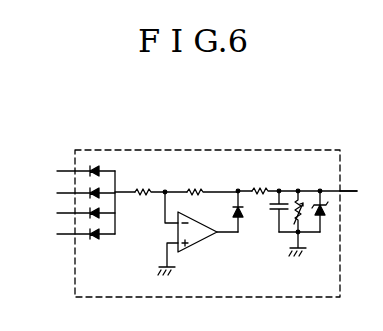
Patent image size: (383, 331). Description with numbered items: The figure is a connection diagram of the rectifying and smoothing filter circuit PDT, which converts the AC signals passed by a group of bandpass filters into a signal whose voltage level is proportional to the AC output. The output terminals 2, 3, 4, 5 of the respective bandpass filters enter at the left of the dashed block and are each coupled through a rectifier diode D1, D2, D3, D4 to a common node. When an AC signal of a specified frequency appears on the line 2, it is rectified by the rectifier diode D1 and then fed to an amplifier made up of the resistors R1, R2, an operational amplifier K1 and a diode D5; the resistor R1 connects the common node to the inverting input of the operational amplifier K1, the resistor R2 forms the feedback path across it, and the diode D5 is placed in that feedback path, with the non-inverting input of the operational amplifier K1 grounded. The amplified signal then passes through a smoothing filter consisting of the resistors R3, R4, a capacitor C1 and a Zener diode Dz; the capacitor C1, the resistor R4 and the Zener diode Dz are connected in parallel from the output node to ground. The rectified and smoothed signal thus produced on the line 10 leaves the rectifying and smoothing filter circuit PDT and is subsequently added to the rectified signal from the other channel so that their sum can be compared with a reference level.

The output terminal 2 is at (57, 171).
The output terminal 3 is at (57, 193).
The output terminal 4 is at (57, 213).
The output terminal 5 is at (57, 234).
The output signal line 10 is at (350, 191).
The rectifier diode D1 is at (93, 168).
The rectifier diode D2 is at (95, 190).
The rectifier diode D3 is at (101, 215).
The rectifier diode D4 is at (96, 238).
The diode D5 is at (236, 210).
The resistor R1 is at (150, 180).
The resistor R2 is at (212, 180).
The resistor R3 is at (265, 179).
The resistor R4 is at (294, 224).
The capacitor C1 is at (273, 211).
The operational amplifier K1 is at (196, 236).
The Zener diode Dz is at (322, 228).
The rectifying and smoothing filter circuit PDT is at (303, 150).